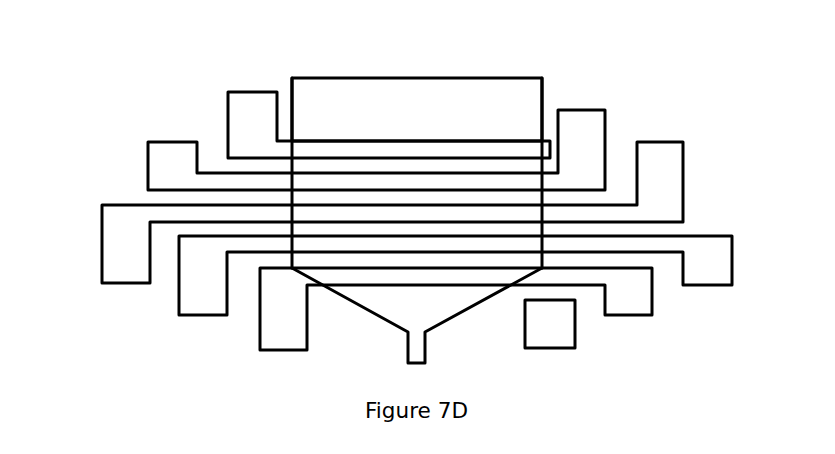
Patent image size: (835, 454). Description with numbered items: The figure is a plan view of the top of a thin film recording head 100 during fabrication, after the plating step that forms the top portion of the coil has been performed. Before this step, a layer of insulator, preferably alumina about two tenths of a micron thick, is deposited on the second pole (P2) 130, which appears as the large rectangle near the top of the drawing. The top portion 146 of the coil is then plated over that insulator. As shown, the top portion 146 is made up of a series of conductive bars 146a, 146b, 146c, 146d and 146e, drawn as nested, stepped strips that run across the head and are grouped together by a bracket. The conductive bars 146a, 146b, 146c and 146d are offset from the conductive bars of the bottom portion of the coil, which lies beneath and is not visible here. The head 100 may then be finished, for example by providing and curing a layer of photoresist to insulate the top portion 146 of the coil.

The thin film recording head 100 is at (437, 42).
The second pole (P2) 130 is at (480, 78).
The top portion of the coil 146 is at (730, 112).
The conductive bar 146a is at (260, 92).
The conductive bar 146b is at (182, 141).
The conductive bar 146c is at (118, 285).
The conductive bar 146d is at (197, 317).
The conductive bar 146e is at (275, 350).